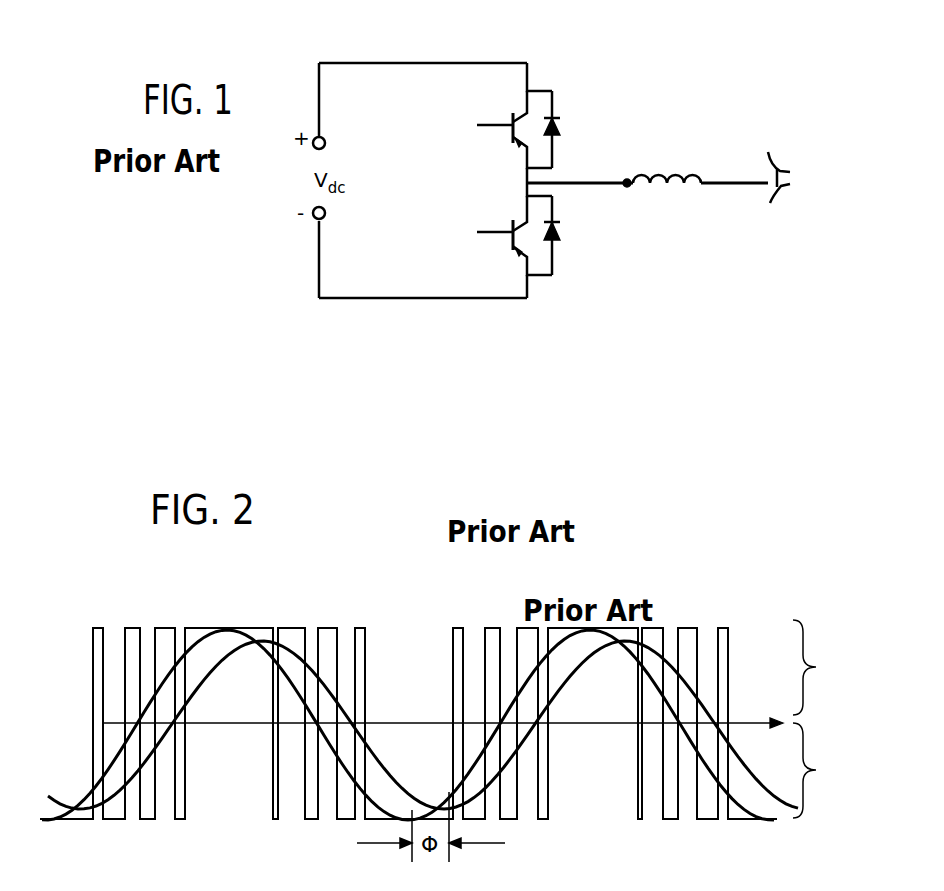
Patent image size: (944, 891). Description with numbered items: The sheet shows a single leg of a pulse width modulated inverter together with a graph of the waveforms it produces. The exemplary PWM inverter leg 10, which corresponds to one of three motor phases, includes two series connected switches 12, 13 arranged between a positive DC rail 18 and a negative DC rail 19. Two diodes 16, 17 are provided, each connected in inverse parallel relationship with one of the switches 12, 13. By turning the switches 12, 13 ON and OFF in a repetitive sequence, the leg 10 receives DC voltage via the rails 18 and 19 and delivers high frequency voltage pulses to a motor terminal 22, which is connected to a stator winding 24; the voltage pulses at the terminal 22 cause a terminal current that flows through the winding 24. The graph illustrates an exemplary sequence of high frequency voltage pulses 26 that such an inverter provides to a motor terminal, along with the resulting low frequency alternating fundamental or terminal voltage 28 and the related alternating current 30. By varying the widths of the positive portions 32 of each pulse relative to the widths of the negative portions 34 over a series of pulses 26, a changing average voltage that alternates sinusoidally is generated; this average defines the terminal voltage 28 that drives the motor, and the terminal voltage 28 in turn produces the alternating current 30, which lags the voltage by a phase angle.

In FIG. 1, the PWM inverter leg 10 is at (541, 58).
In FIG. 1, the switch 12 is at (507, 135).
In FIG. 1, the switch 13 is at (507, 247).
In FIG. 1, the diode 16 is at (560, 128).
In FIG. 1, the diode 17 is at (560, 233).
In FIG. 1, the positive DC rail 18 is at (355, 63).
In FIG. 1, the negative DC rail 19 is at (385, 298).
In FIG. 1, the motor terminal 22 is at (630, 180).
In FIG. 1, the stator winding 24 is at (677, 195).
In FIG. 2, the high frequency voltage pulses 26 is at (168, 628).
In FIG. 2, the terminal voltage 28 is at (195, 628).
In FIG. 2, the alternating current 30 is at (352, 706).
In FIG. 2, the positive portions 32 is at (822, 667).
In FIG. 2, the negative portions 34 is at (820, 770).